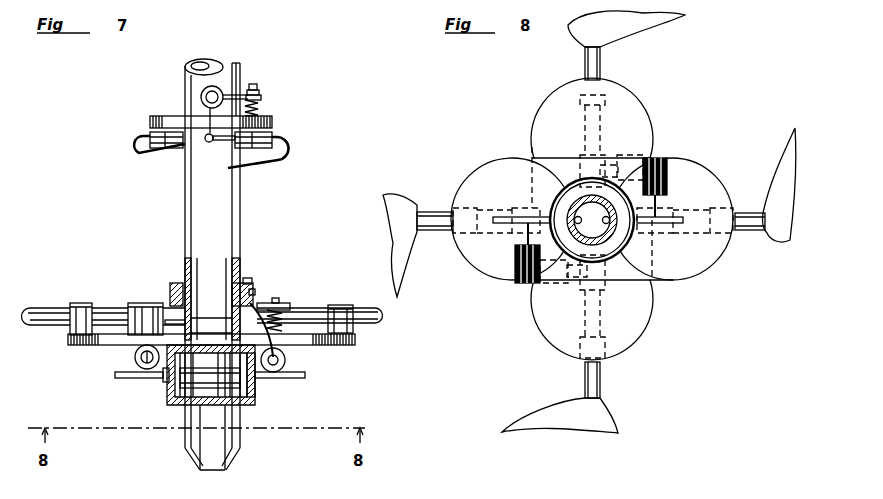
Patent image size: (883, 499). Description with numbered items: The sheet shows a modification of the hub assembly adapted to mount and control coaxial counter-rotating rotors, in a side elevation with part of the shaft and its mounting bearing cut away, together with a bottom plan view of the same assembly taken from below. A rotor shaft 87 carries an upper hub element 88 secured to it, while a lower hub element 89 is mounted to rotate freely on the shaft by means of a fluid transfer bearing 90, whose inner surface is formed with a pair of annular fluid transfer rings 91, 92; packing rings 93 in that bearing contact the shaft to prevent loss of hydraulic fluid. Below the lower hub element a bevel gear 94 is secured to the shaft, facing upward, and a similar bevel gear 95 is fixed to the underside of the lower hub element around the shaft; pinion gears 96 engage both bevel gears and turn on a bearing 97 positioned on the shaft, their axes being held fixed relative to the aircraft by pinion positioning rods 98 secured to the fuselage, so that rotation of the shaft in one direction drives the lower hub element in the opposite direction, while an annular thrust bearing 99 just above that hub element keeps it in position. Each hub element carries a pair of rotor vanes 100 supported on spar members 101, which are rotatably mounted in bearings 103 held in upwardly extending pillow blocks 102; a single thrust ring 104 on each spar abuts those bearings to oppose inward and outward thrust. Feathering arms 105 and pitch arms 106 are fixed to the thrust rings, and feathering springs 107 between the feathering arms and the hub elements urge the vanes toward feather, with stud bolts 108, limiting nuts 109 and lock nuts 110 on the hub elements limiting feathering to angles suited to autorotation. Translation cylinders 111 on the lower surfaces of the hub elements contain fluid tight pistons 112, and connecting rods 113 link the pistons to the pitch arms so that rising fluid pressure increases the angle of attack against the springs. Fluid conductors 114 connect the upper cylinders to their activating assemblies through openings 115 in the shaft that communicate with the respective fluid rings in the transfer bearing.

In FIG. 7, the rotor shaft 87 is at (242, 217).
In FIG. 8, the rotor shaft 87 is at (577, 200).
In FIG. 7, the upper hub element 88 is at (272, 122).
In FIG. 8, the upper hub element 88 is at (645, 110).
In FIG. 7, the lower hub element 89 is at (355, 342).
In FIG. 8, the lower hub element 89 is at (698, 165).
In FIG. 7, the fluid transfer bearing 90 is at (253, 293).
In FIG. 7, the fluid transfer ring 91 is at (187, 307).
In FIG. 7, the fluid transfer ring 92 is at (232, 305).
In FIG. 7, the packing ring 93 is at (182, 283).
In FIG. 7, the bevel gear 94 is at (252, 407).
In FIG. 7, the bevel gear 95 is at (298, 348).
In FIG. 7, the pinion gear 96 is at (256, 390).
In FIG. 7, the bearing 97 is at (166, 390).
In FIG. 7, the pinion positioning rod 98 is at (118, 374).
In FIG. 8, the pinion positioning rod 98 is at (675, 223).
In FIG. 7, the annular thrust bearing 99 is at (248, 282).
In FIG. 8, the rotor vane 100 is at (663, 33).
In FIG. 8, the spar member 101 is at (602, 65).
In FIG. 7, the pillow block 102 is at (192, 108).
In FIG. 7, the bearing 103 is at (210, 92).
In FIG. 8, the bearing 103 is at (580, 97).
In FIG. 7, the thrust ring 104 is at (145, 303).
In FIG. 7, the feathering arm 105 is at (240, 95).
In FIG. 7, the pitch arm 106 is at (207, 135).
In FIG. 7, the feathering spring 107 is at (260, 110).
In FIG. 7, the stud bolt 108 is at (262, 98).
In FIG. 7, the limiting nut 109 is at (258, 91).
In FIG. 7, the lock nut 110 is at (257, 85).
In FIG. 7, the translation cylinder 111 is at (273, 133).
In FIG. 8, the translation cylinder 111 is at (660, 160).
In FIG. 7, the piston 112 is at (148, 133).
In FIG. 8, the piston 112 is at (667, 180).
In FIG. 7, the connecting rod 113 is at (215, 136).
In FIG. 8, the connecting rod 113 is at (528, 238).
In FIG. 7, the fluid conductor 114 is at (134, 148).
In FIG. 8, the fluid conductor 114 is at (617, 232).
In FIG. 7, the opening 115 is at (232, 325).